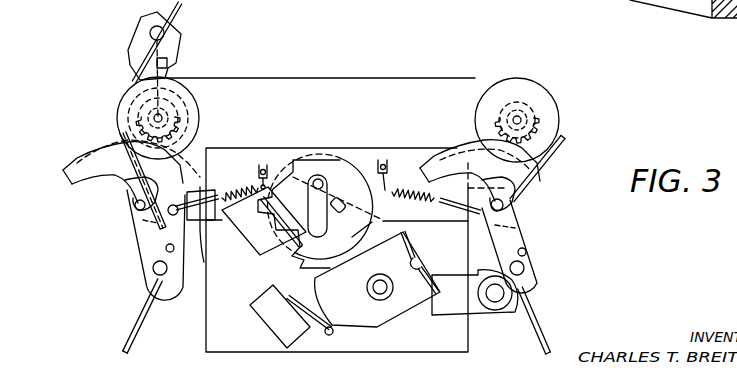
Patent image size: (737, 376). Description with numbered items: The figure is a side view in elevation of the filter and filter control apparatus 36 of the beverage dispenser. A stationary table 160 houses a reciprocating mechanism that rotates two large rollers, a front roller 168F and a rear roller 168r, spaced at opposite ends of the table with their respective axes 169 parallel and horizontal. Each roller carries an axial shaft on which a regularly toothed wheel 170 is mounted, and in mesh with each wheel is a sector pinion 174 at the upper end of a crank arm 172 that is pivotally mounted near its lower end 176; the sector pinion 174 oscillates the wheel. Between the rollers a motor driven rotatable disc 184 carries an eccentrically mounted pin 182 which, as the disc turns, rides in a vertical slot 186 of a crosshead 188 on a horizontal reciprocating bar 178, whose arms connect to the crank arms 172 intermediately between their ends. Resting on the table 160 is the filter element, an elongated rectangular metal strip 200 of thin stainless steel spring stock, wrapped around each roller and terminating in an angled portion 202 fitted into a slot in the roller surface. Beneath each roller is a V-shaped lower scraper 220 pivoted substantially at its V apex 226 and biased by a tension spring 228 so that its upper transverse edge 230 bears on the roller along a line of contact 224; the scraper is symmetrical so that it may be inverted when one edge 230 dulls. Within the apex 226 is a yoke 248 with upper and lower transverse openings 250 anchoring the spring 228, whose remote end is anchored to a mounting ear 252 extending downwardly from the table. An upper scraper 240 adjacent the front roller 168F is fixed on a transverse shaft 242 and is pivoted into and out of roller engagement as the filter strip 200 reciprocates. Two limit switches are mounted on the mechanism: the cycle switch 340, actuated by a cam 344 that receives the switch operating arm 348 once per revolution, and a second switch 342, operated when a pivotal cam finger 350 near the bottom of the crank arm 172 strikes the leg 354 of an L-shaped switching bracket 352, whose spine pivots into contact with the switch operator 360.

The mechanism assembly 36 is at (434, 112).
The stationary table 160 is at (220, 147).
The front roller 168F is at (125, 106).
The rear roller 168r is at (548, 100).
The roller axis 169 is at (522, 124).
The toothed wheel 170 is at (172, 120).
The crank arm 172 is at (130, 234).
The sector pinion 174 is at (72, 163).
The lower end of crank arm 176 is at (153, 268).
The horizontal reciprocating bar 178 is at (216, 233).
The pin 182 is at (322, 172).
The motor driven rotatable disc 184 is at (360, 158).
The vertical slot 186 is at (316, 233).
The crosshead 188 is at (304, 147).
The filter strip 200 is at (405, 78).
The angled portion 202 is at (98, 141).
The lower scraper 220 is at (142, 312).
The line of contact 224 is at (553, 145).
The V apex 226 is at (478, 248).
The tension spring 228 is at (233, 197).
The transverse edge 230 is at (125, 351).
The upper scraper 240 is at (131, 50).
The transverse shaft 242 is at (164, 33).
The yoke 248 is at (324, 192).
The transverse openings 250 is at (113, 186).
The mounting ear 252 is at (269, 152).
The cycle switch 340 is at (246, 222).
The limit switch 342 is at (272, 320).
The cam 344 is at (322, 283).
The switch operating arm 348 is at (292, 246).
The pivotal cam finger 350 is at (497, 312).
The L-shaped switching bracket 352 is at (400, 302).
The bracket leg 354 is at (470, 316).
The switch operator 360 is at (334, 333).